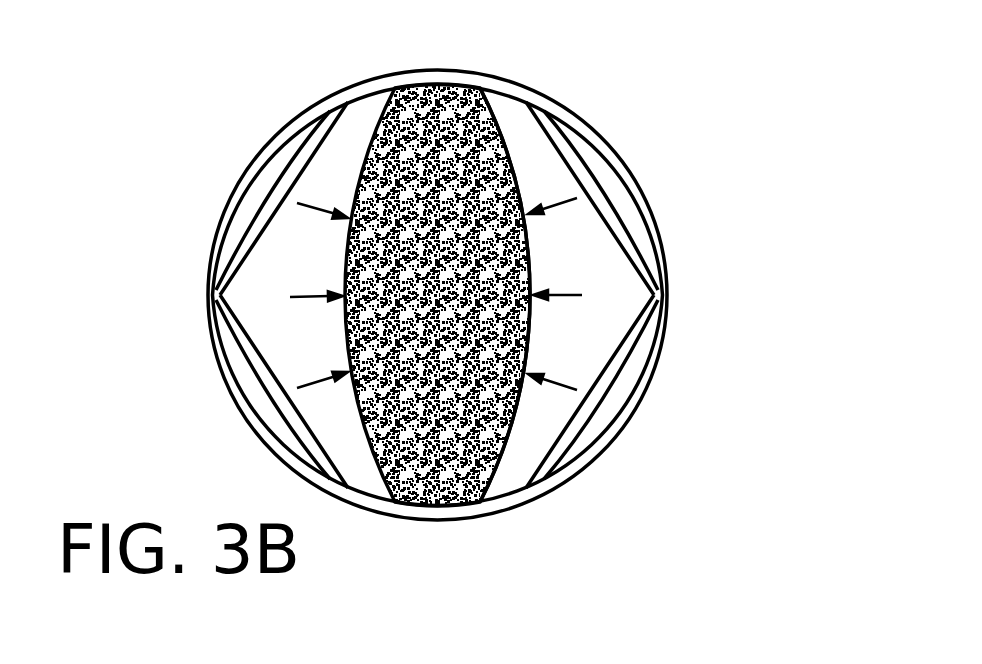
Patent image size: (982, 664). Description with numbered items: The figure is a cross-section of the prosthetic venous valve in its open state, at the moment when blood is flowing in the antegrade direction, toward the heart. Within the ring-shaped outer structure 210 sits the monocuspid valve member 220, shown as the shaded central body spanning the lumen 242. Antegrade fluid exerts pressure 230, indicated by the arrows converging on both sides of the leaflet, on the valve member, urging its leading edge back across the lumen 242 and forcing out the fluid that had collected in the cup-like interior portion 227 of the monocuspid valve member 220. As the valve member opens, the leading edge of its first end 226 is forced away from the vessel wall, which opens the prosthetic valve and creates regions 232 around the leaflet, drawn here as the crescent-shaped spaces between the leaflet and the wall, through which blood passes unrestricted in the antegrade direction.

The housing 210 is at (620, 157).
The monocuspid valve member 220 is at (460, 88).
The first end 226 is at (503, 139).
The interior portion 227 is at (455, 298).
The pressure 230 is at (290, 297).
The regions 232 is at (367, 100).
The lumen 242 is at (518, 470).